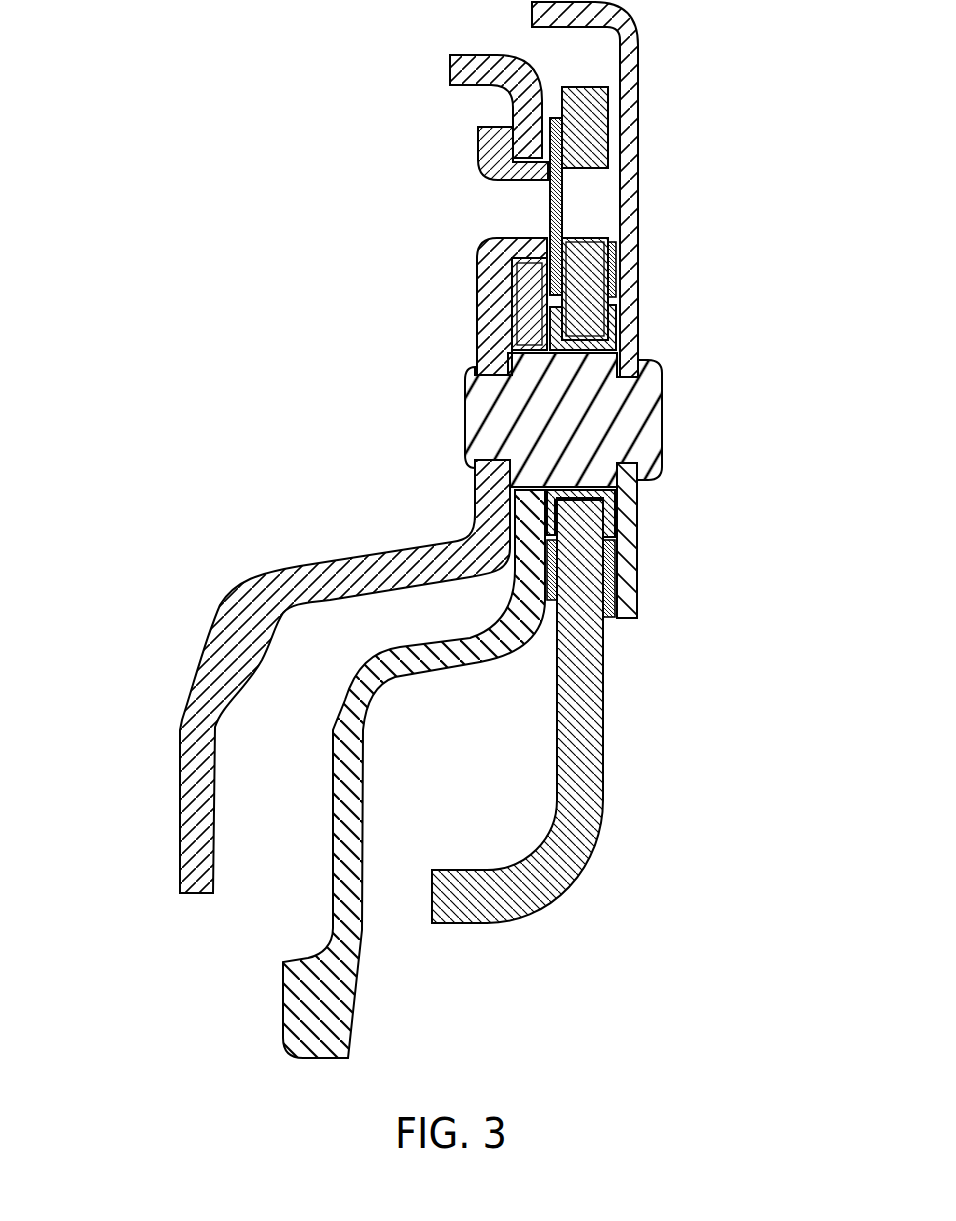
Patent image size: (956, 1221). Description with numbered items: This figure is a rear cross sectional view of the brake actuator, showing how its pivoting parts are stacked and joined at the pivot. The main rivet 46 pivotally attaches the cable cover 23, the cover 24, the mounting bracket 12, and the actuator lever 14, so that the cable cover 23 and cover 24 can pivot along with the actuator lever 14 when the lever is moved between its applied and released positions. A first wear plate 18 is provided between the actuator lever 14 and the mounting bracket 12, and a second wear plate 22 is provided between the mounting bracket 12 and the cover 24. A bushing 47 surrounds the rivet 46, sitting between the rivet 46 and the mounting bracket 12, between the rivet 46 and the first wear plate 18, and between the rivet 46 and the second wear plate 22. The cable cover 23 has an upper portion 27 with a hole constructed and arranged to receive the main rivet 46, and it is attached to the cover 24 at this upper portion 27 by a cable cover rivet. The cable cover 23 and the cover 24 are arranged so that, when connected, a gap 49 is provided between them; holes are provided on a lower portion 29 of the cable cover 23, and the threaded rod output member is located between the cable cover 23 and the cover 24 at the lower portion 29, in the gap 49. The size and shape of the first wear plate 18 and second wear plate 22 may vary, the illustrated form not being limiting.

The mounting bracket 12 is at (588, 707).
The actuator lever 14 is at (630, 63).
The first wear plate 18 is at (613, 257).
The second wear plate 22 is at (552, 195).
The cable cover 23 is at (311, 676).
The cover 24 is at (455, 68).
The upper portion 27 is at (487, 318).
The lower portion 29 is at (311, 676).
The main rivet 46 is at (653, 412).
The bushing 47 is at (610, 327).
The gap 49 is at (263, 815).